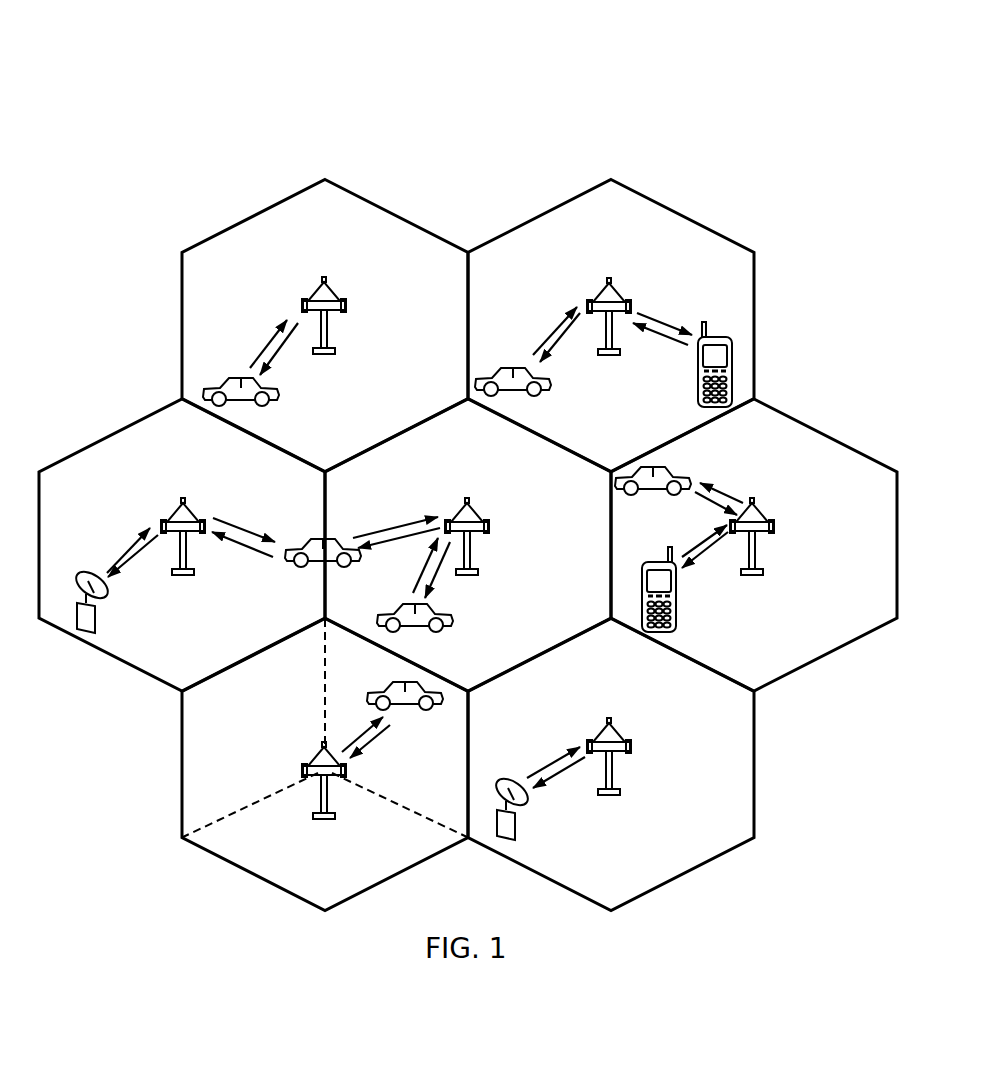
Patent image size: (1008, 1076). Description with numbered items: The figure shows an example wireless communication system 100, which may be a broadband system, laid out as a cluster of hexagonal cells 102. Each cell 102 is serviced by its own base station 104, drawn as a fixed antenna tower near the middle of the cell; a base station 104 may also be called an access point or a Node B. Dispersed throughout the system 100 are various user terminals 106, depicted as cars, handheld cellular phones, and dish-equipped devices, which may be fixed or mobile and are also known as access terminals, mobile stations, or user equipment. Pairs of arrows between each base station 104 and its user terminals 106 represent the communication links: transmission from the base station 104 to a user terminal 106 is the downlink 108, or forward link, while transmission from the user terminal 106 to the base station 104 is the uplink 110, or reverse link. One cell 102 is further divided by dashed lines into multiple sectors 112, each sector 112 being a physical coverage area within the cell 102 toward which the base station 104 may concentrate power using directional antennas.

The wireless communication system 100 is at (672, 76).
The cell 102 is at (262, 211).
The base station 104 is at (324, 281).
The user terminal 106 is at (279, 394).
The downlink 108 is at (278, 352).
The uplink 110 is at (270, 342).
The sector 112 is at (376, 874).